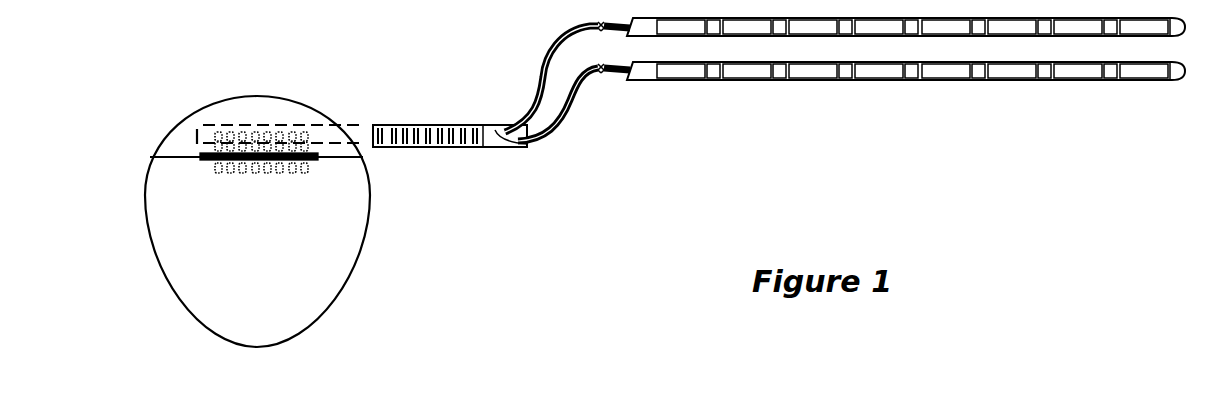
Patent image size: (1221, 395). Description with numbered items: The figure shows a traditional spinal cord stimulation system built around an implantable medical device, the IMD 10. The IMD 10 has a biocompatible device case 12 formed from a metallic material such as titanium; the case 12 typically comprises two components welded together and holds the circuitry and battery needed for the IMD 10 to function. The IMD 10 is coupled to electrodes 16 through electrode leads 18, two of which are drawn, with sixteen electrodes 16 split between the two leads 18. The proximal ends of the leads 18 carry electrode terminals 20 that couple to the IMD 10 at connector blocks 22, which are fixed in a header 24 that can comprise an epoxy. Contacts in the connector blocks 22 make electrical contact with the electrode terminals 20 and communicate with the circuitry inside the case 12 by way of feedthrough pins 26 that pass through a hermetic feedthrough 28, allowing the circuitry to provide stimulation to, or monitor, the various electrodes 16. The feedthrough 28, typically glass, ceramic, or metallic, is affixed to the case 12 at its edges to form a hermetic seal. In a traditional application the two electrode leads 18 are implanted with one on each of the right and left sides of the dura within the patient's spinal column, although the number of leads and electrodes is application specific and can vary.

The IMD 10 is at (154, 76).
The device case 12 is at (357, 270).
The electrodes 16 is at (763, 82).
The electrode leads 18 is at (982, 138).
The electrode terminals 20 is at (427, 147).
The connector blocks 22 is at (318, 125).
The header 24 is at (160, 140).
The feedthrough pins 26 is at (303, 170).
The hermetic feedthrough 28 is at (205, 162).